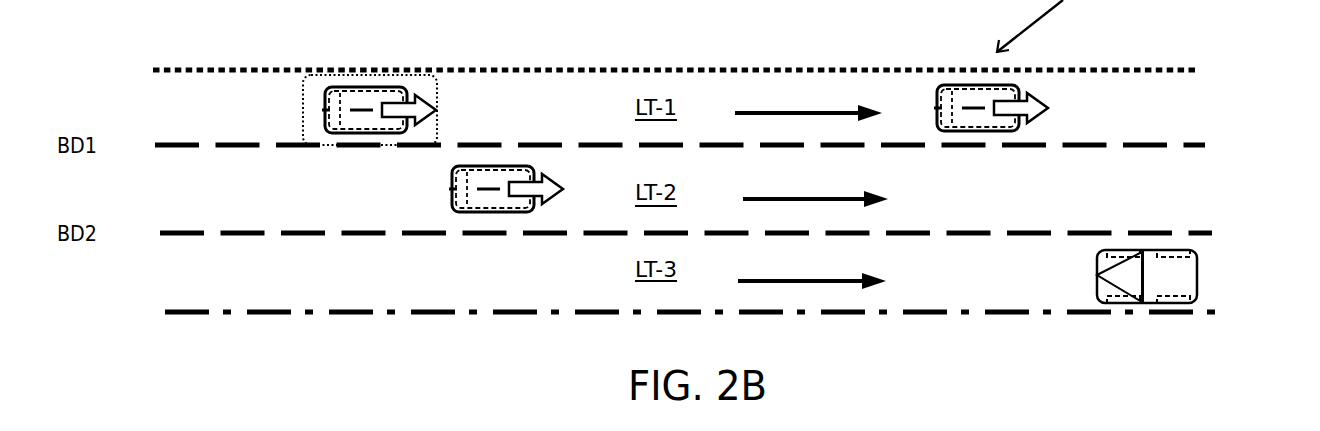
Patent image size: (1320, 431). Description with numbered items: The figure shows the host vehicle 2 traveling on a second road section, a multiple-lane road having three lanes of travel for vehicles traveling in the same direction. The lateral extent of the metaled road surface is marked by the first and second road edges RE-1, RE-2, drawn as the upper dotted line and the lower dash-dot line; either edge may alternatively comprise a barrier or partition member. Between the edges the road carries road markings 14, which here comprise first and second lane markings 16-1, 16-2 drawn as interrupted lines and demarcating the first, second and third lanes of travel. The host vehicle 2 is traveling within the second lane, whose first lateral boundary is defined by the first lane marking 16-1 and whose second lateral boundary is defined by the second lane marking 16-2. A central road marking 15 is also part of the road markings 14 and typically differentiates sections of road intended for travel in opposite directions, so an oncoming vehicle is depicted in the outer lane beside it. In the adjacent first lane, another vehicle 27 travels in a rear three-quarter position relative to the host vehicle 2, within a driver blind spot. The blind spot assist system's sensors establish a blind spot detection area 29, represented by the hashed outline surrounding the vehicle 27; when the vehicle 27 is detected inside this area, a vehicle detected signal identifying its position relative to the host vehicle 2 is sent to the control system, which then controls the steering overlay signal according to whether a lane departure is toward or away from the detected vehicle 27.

The host vehicle 2 is at (495, 180).
The vehicle 27 is at (348, 110).
The blind spot detection area 29 is at (317, 110).
The road markings 14 is at (1175, 113).
The central road marking 15 is at (1180, 308).
The first lane marking 16-1 is at (1205, 145).
The second lane marking 16-2 is at (1208, 233).
The first road edge RE-1 is at (1113, 70).
The second road edge RE-2 is at (1133, 308).